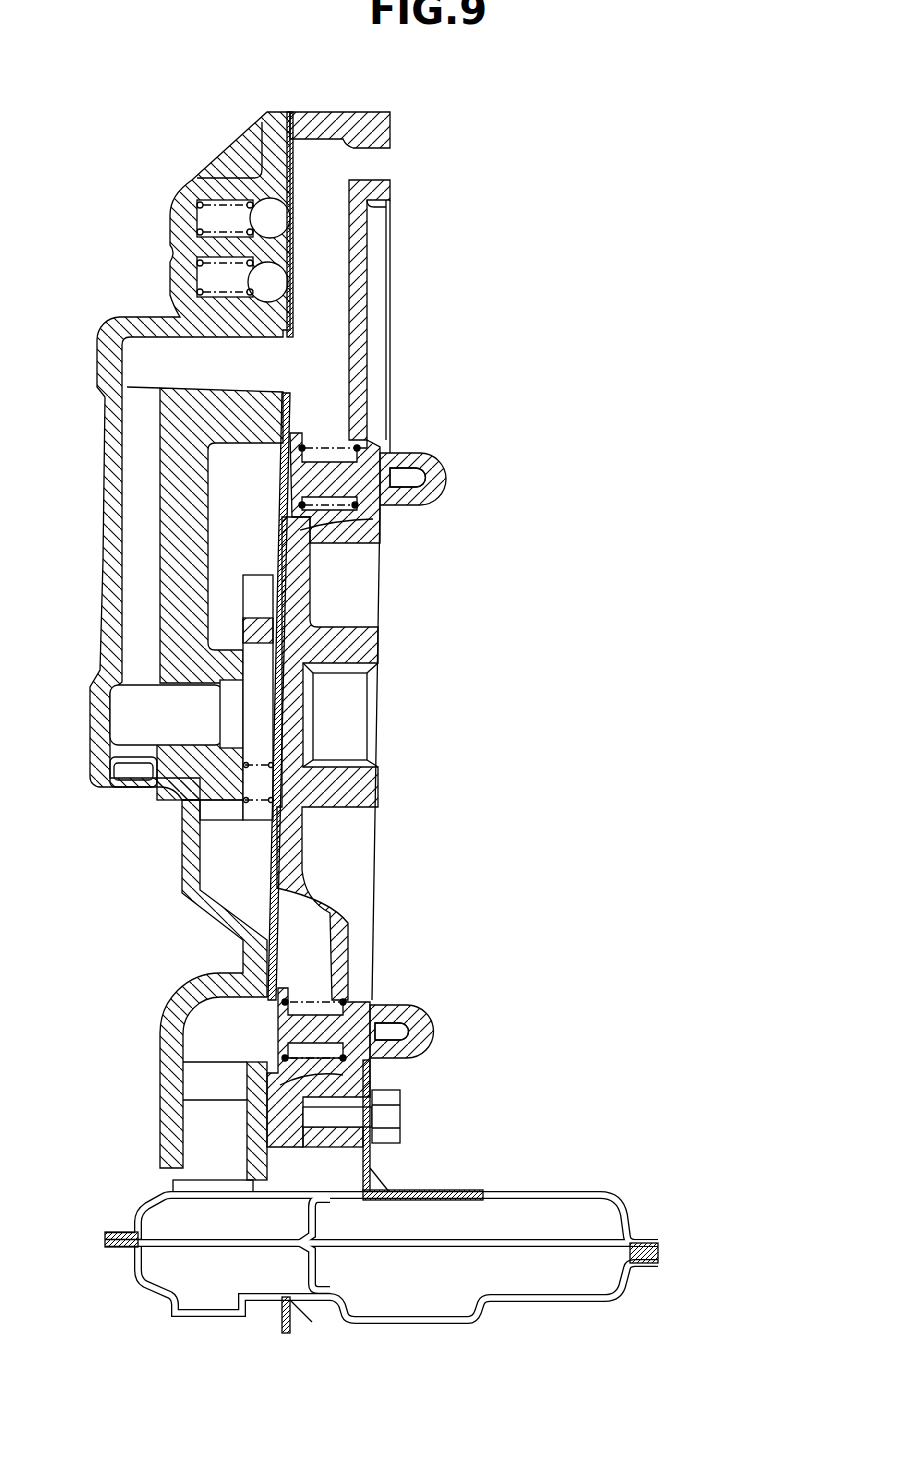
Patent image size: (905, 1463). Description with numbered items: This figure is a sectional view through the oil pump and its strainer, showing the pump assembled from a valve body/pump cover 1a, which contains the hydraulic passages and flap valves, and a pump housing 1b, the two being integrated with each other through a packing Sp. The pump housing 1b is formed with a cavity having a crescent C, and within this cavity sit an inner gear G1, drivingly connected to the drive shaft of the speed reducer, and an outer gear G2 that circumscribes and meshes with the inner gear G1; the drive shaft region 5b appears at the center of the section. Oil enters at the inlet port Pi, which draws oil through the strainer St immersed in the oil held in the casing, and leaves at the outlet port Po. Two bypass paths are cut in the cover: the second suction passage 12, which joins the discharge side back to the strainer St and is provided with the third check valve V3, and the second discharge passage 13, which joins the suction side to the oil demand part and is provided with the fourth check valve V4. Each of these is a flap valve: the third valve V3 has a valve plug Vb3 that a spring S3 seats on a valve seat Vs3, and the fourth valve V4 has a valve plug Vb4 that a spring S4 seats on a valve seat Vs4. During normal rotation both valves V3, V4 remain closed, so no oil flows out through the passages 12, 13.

The valve body/pump cover 1a is at (383, 135).
The pump housing 1b is at (285, 127).
The second discharge passage 13 is at (325, 400).
The spring S4 is at (343, 440).
The valve plug Vb4 is at (400, 463).
The fourth check valve V4 is at (455, 483).
The valve seat Vs4 is at (365, 525).
The inlet port Pi is at (225, 607).
The crescent C is at (325, 637).
The window opening 5b is at (347, 723).
The inner gear G1 is at (250, 762).
The outer gear G2 is at (258, 805).
The outlet port Po is at (222, 854).
The packing Sp is at (292, 868).
The second suction passage 12 is at (307, 957).
The spring S3 is at (312, 997).
The valve plug Vb3 is at (378, 1027).
The third check valve V3 is at (445, 1040).
The valve seat Vs3 is at (373, 1083).
The strainer St is at (543, 1200).